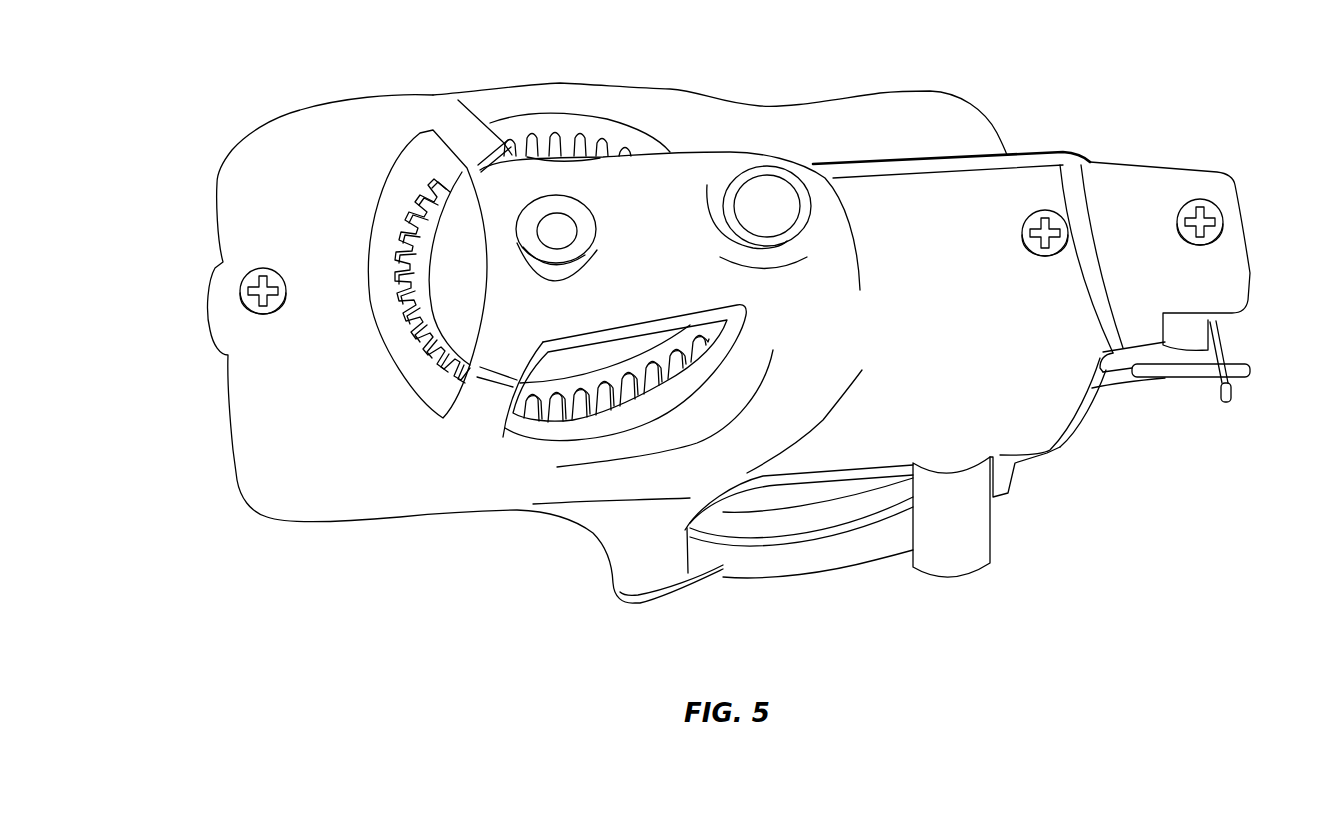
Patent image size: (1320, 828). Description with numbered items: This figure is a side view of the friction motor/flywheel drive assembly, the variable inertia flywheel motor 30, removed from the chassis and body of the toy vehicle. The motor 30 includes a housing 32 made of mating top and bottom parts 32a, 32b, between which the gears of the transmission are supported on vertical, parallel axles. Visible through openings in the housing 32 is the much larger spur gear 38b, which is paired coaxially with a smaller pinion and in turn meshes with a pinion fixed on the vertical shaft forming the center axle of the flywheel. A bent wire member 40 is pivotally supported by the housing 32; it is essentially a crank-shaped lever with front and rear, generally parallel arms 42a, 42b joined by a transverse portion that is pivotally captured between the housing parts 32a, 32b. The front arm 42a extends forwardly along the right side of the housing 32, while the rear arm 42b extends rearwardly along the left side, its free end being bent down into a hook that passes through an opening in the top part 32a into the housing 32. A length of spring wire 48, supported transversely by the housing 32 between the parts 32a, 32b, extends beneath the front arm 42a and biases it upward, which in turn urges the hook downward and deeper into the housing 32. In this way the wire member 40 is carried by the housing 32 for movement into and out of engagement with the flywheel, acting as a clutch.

The variable inertia flywheel motor 30 is at (192, 216).
The housing 32 is at (267, 453).
The top part 32a is at (840, 457).
The bottom part 32b is at (782, 570).
The spur gear 38b is at (440, 350).
The bent wire member 40 is at (1037, 147).
The front arm 42a is at (1190, 370).
The rear arm 42b is at (903, 167).
The spring wire 48 is at (1224, 350).